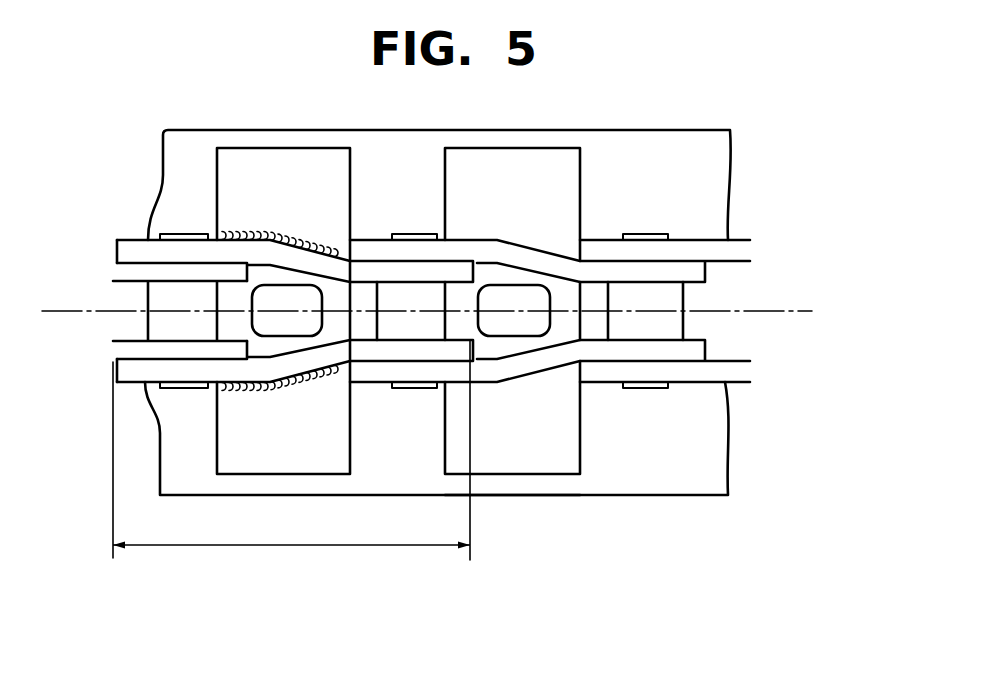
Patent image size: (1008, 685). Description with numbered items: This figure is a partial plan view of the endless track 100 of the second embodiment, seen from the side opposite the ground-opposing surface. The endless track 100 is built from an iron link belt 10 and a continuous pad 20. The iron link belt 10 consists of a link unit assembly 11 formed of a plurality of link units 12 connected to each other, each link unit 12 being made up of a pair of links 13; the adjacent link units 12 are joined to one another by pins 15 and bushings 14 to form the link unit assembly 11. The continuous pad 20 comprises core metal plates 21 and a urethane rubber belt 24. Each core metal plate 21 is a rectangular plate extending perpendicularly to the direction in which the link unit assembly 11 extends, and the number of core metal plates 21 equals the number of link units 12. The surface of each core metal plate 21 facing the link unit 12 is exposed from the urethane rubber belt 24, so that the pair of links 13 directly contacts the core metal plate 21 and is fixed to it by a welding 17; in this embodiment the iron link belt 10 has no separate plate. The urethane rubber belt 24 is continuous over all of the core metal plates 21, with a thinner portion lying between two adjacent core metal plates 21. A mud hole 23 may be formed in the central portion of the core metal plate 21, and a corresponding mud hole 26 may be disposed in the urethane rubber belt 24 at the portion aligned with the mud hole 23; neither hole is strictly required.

The endless track 100 is at (620, 127).
The continuous pad 20 is at (633, 497).
The urethane rubber belt 24 is at (562, 486).
The core metal plate 21 is at (308, 148).
The link unit assembly 11 is at (133, 246).
The iron link belt 10 is at (110, 375).
The link 13 is at (117, 250).
The pin 15 is at (188, 235).
The welding 17 is at (275, 237).
The bushing 14 is at (147, 300).
The mud hole 23 is at (277, 334).
The mud hole 26 is at (277, 500).
The link unit 12 is at (243, 545).